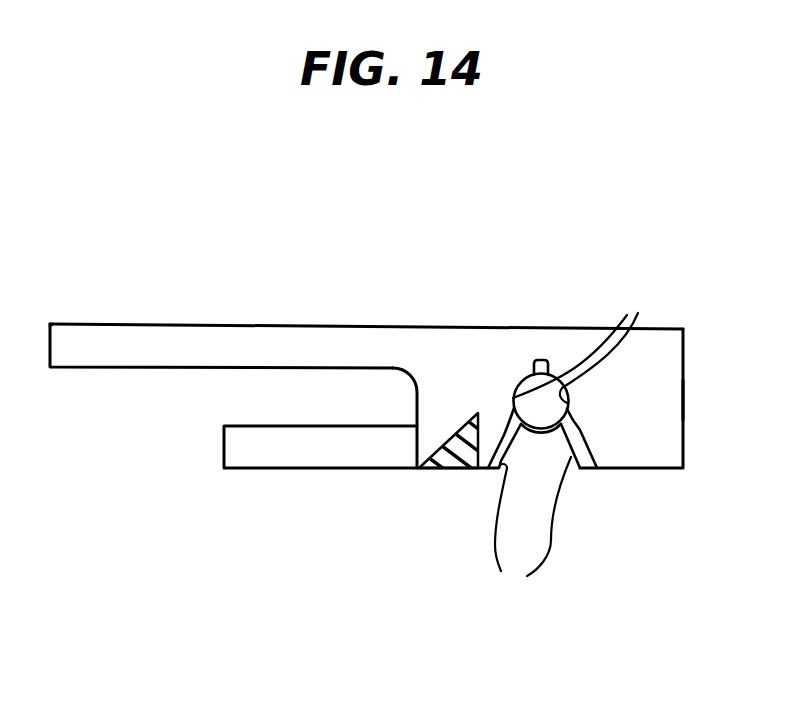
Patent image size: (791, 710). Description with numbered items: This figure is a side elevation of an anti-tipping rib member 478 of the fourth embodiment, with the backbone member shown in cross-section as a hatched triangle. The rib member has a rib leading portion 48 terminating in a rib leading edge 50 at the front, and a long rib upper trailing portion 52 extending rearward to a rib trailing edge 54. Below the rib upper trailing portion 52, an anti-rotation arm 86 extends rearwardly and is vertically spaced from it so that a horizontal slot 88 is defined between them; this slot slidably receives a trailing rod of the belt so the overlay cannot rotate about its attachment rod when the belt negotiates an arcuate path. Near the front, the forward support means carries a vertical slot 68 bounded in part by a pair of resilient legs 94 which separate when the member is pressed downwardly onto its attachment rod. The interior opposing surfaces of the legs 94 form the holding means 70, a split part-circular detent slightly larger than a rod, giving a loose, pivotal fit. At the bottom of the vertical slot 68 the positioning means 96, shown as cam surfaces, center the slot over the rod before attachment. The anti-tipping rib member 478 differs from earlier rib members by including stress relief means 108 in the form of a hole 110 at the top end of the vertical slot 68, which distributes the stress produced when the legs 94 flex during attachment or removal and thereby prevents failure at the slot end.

The anti-tipping rib member 478 is at (450, 306).
The rib upper trailing portion 52 is at (122, 336).
The rib trailing edge 54 is at (49, 338).
The horizontal slot 88 is at (332, 377).
The anti-rotation arm 86 is at (280, 457).
The rib leading portion 48 is at (663, 344).
The rib leading edge 50 is at (684, 398).
The stress relief means 108 is at (557, 346).
The hole 110 is at (537, 358).
The holding means 70 is at (581, 346).
The vertical slot 68 is at (538, 452).
The resilient legs 94 is at (488, 468).
The positioning means 96 is at (531, 527).